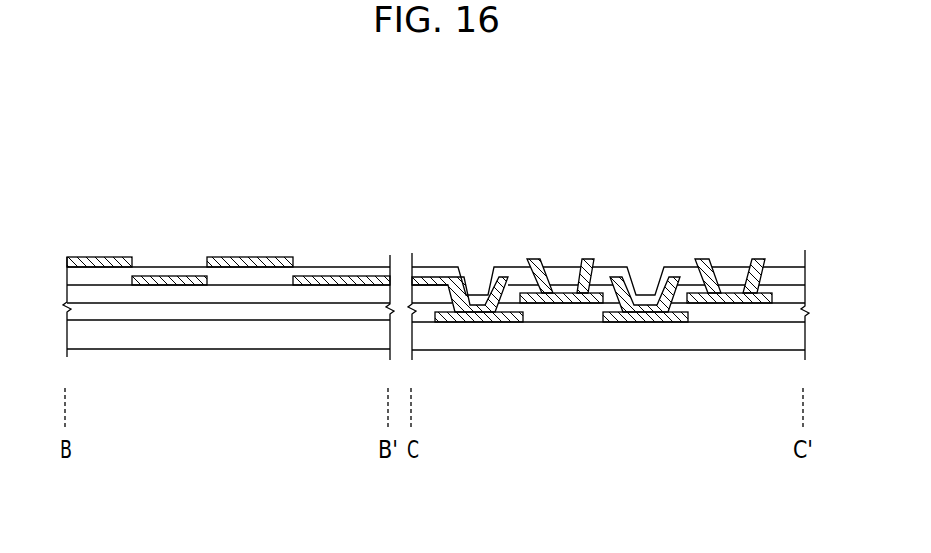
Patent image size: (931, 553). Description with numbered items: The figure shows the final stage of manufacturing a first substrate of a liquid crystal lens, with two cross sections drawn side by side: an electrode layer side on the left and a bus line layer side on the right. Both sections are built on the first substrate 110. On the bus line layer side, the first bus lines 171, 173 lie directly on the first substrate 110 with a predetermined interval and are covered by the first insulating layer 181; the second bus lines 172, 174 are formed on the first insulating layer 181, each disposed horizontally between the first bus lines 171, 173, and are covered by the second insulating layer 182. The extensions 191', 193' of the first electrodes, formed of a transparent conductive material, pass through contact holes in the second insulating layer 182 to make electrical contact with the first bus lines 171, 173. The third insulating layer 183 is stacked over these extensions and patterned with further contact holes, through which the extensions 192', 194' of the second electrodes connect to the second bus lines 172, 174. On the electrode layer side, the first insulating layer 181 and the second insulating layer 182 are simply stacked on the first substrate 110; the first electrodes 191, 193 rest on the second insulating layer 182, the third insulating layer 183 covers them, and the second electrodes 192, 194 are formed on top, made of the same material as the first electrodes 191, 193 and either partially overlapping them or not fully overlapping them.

The first substrate 110 is at (275, 338).
The first insulating layer 181 is at (185, 312).
The second insulating layer 182 is at (258, 297).
The third insulating layer 183 is at (227, 278).
The first bus line 171 is at (484, 312).
The second bus line 172 is at (565, 293).
The first bus line 173 is at (651, 312).
The second bus line 174 is at (735, 293).
The first electrode 191 is at (341, 246).
The second electrode 192 is at (264, 219).
The first electrode 193 is at (169, 246).
The second electrode 194 is at (99, 232).
The extension of first electrode 191' is at (458, 251).
The extension of second electrode 192' is at (546, 227).
The extension of first electrode 193' is at (633, 245).
The extension of second electrode 194' is at (715, 227).